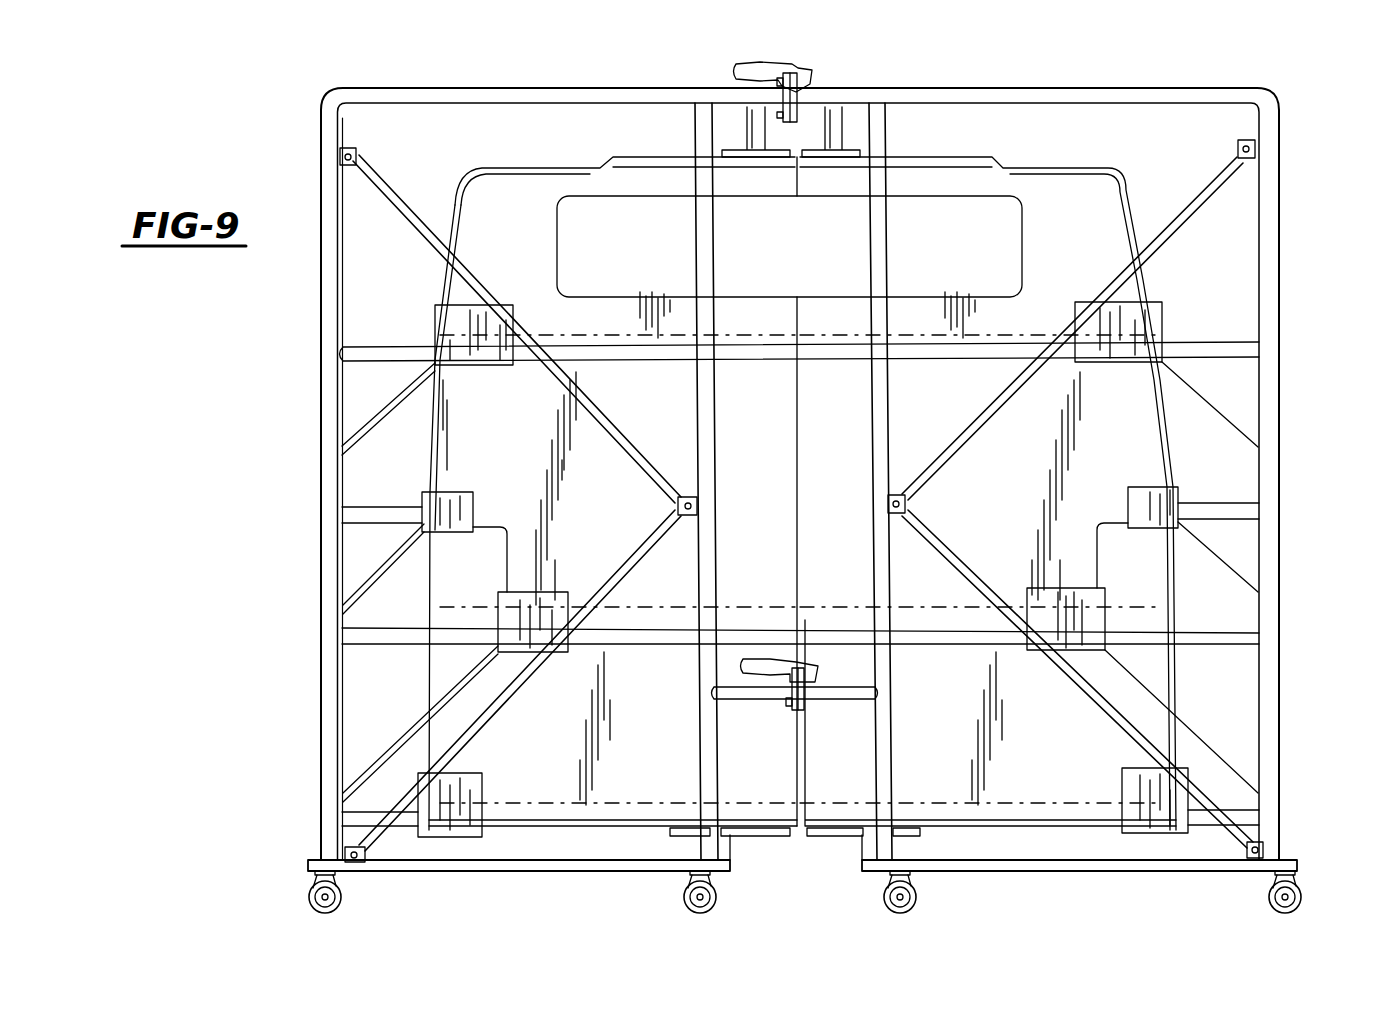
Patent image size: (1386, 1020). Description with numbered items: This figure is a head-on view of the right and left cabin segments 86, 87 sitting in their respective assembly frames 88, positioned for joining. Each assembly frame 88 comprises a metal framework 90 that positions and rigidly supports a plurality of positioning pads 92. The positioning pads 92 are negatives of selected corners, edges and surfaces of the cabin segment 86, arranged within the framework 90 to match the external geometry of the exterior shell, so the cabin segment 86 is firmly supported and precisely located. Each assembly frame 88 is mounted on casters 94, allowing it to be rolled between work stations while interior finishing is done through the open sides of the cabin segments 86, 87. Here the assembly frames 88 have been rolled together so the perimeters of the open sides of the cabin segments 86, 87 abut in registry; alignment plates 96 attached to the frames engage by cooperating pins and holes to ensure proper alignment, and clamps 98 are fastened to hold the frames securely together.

The cabin segment 86 is at (1130, 156).
The cabin segment 87 is at (462, 156).
The assembly frame 88 is at (306, 152).
The metal framework 90 is at (322, 520).
The positioning pads 92 is at (437, 324).
The casters 94 is at (308, 893).
The alignment plates 96 is at (797, 103).
The clamps 98 is at (736, 70).